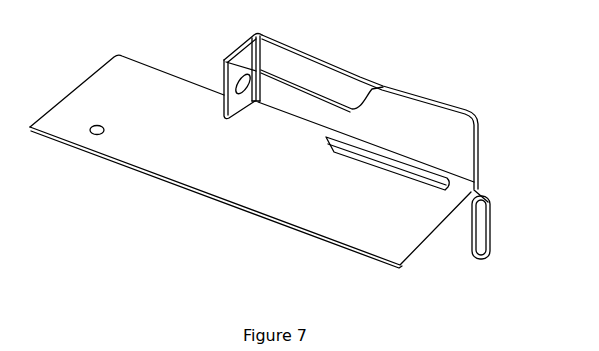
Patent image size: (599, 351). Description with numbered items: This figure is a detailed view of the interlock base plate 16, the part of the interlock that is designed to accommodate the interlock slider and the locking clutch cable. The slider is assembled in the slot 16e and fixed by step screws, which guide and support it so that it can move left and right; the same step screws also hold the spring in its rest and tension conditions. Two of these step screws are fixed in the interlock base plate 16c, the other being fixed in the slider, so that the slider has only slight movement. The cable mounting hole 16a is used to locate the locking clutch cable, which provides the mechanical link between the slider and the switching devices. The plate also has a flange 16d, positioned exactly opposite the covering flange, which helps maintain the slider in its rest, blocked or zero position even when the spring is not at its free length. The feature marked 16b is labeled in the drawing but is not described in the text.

The interlock base plate 16 is at (491, 58).
The cable mounting hole 16a is at (226, 63).
The rear rail 16b is at (360, 80).
The interlock base plate 16c is at (330, 183).
The flange 16d is at (396, 242).
The slot 16e is at (417, 169).